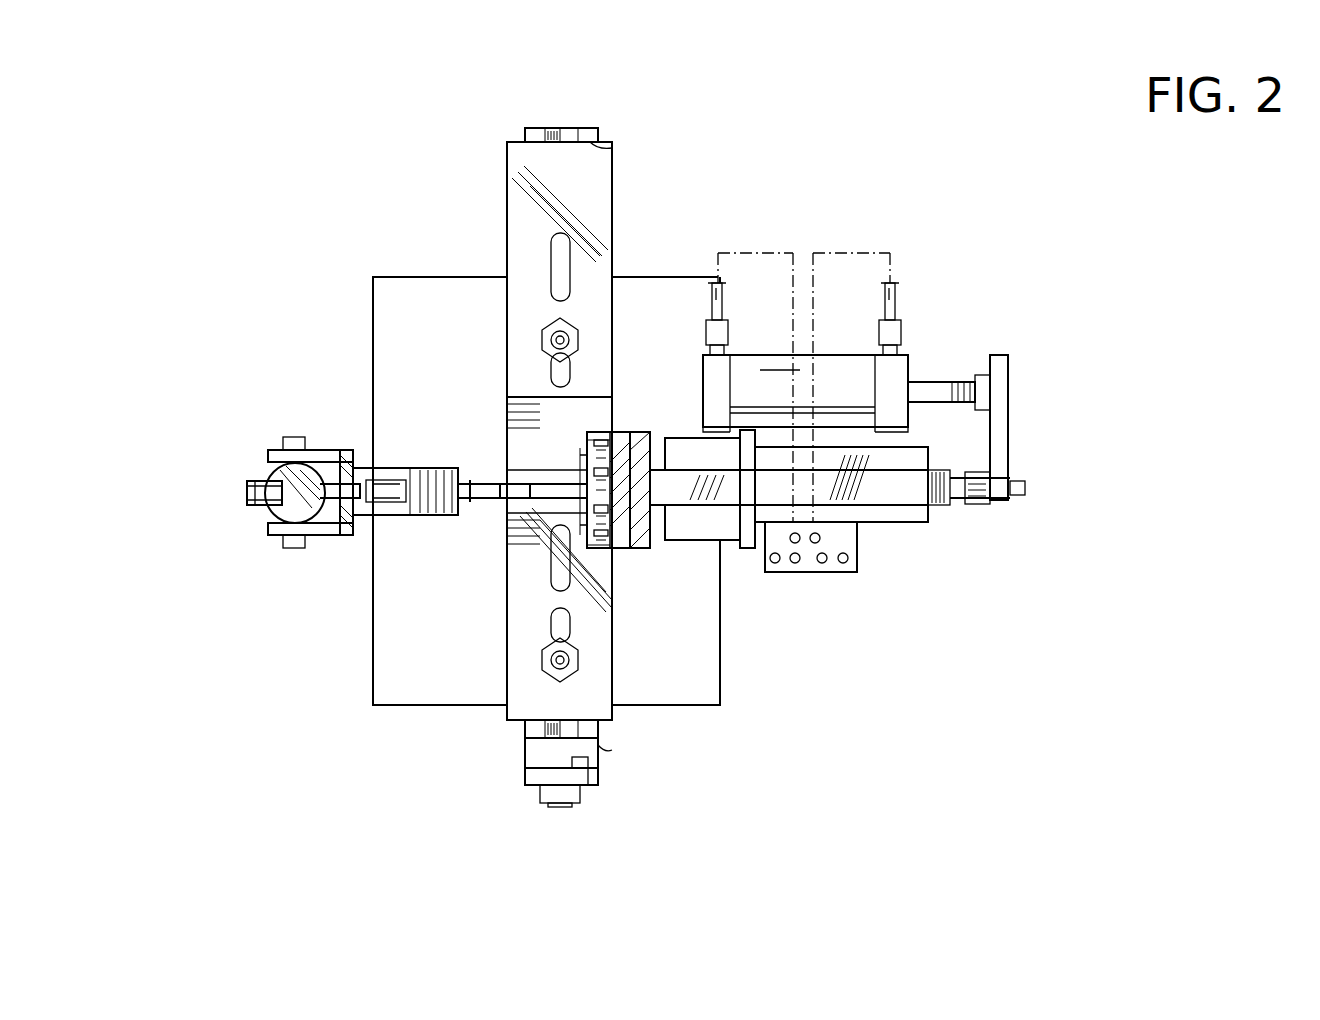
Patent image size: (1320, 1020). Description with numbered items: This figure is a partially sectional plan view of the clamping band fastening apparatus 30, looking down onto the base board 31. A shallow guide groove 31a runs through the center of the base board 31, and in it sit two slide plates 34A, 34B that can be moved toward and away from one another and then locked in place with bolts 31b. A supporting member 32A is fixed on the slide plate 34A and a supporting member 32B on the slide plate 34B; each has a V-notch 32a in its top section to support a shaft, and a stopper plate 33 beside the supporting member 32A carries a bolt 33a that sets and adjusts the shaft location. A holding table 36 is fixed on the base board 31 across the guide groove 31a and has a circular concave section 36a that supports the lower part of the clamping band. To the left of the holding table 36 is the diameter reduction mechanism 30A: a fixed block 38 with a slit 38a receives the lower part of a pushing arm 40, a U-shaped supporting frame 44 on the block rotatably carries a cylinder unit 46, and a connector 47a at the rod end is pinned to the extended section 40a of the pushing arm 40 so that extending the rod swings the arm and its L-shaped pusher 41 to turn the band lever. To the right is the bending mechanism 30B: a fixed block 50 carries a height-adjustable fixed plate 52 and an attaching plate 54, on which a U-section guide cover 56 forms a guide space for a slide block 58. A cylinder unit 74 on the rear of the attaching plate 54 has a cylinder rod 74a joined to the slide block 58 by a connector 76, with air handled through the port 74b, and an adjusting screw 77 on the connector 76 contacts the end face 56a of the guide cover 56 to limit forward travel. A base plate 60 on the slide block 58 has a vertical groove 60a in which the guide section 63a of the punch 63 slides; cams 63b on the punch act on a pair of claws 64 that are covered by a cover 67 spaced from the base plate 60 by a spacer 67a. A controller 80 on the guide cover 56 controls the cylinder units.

The die assembly 30 is at (712, 178).
The diameter reduction mechanism 30A is at (290, 362).
The bending mechanism 30B is at (914, 276).
The base board 31 is at (395, 663).
The guide groove 31a is at (508, 398).
The bolt 31b is at (548, 335).
The supporting member 32A is at (525, 730).
The supporting member 32B is at (525, 133).
The V-notch 32a is at (612, 148).
The stopper plate 33 is at (525, 777).
The bolt 33a is at (582, 803).
The slide plate 34A is at (612, 683).
The slide plate 34B is at (515, 217).
The holding table 36 is at (478, 483).
The circular concave section 36a is at (505, 470).
The fixed block 38 is at (432, 518).
The slit 38a is at (358, 530).
The pushing arm 40 is at (312, 540).
The extended section 40a is at (250, 494).
The L-shaped pusher 41 is at (392, 470).
The supporting frame 44 is at (268, 455).
The cylinder unit 46 is at (275, 522).
The connector 47a is at (258, 482).
The fixed block 50 is at (722, 560).
The fixed plate 52 is at (748, 552).
The attaching plate 54 is at (880, 470).
The guide cover 56 is at (920, 490).
The end face 56a is at (940, 510).
The slide block 58 is at (975, 508).
The base plate 60 is at (660, 540).
The vertical groove 60a is at (650, 522).
The punch 63 is at (590, 483).
The guide section 63a is at (650, 450).
The cam 63b is at (592, 456).
The claw 64 is at (632, 440).
The cover 67 is at (612, 438).
The spacer 67a is at (612, 435).
The cylinder unit 74 is at (765, 365).
The cylinder rod 74a is at (712, 330).
The port 74b is at (905, 325).
The connector 76 is at (1008, 440).
The adjusting screw 77 is at (1020, 500).
The controller 80 is at (810, 572).